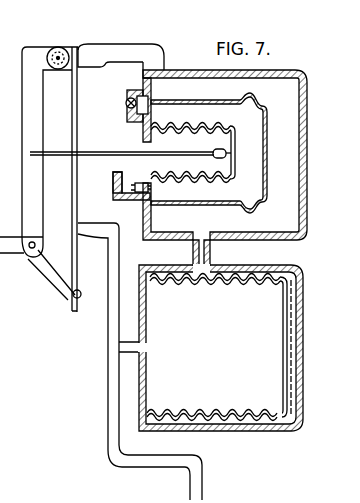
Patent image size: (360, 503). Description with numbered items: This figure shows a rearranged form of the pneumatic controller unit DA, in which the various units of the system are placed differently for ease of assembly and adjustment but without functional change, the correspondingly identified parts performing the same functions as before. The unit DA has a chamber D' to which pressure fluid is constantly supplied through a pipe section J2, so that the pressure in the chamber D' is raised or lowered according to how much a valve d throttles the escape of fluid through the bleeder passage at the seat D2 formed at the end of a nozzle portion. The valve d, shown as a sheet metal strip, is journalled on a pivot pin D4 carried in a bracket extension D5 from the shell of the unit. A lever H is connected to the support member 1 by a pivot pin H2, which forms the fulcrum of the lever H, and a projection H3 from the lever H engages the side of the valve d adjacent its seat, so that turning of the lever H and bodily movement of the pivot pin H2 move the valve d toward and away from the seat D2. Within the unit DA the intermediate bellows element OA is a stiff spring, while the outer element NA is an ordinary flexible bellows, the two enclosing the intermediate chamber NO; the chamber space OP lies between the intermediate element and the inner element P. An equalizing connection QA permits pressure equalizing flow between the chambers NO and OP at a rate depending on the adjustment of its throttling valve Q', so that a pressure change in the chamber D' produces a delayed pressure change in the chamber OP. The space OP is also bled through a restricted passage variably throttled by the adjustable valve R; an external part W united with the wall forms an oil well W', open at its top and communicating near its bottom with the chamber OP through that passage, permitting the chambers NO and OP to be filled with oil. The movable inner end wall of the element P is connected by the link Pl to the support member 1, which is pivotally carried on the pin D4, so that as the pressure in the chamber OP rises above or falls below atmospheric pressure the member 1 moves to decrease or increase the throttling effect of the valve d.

The frame 1 is at (30, 131).
The pivot pin D4 is at (55, 52).
The bracket extension D5 is at (108, 54).
The valve d is at (78, 128).
The link Pl is at (63, 155).
The pivot pin H2 is at (25, 255).
The lever H is at (52, 272).
The projection H3 is at (78, 298).
The seat D2 is at (80, 226).
The pipe section J2 is at (110, 375).
The controller unit DA is at (322, 226).
The intermediate bellows element OA is at (267, 196).
The chamber space OP is at (253, 180).
The element P is at (233, 153).
The equalizing connection QA is at (127, 92).
The throttling valve Q' is at (116, 106).
The external part W is at (120, 186).
The oil well W' is at (106, 175).
The throttling valve R is at (140, 183).
The chamber NO is at (288, 398).
The bellows element NA is at (288, 362).
The chamber D' is at (245, 347).